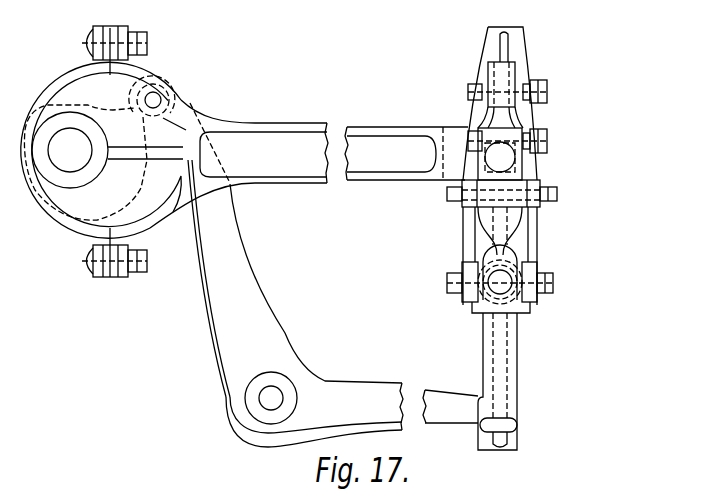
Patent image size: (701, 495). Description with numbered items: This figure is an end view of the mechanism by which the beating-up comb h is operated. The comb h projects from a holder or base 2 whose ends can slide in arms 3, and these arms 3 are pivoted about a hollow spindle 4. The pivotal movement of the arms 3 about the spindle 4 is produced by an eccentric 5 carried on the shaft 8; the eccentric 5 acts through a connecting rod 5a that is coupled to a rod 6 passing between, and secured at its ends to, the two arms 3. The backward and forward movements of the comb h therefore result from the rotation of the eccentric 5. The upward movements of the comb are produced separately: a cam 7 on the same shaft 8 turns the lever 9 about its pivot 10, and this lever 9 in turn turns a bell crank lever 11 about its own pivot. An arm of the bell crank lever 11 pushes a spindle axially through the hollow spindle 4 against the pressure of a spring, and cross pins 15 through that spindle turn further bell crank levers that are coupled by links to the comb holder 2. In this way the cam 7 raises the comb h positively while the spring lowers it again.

The holder or base 2 is at (495, 68).
The arms 3 is at (482, 53).
The hollow spindle 4 is at (497, 273).
The eccentric 5 is at (112, 86).
The connecting rod 5a is at (304, 140).
The rod 6 is at (500, 154).
The cam 7 is at (159, 236).
The shaft 8 is at (70, 150).
The lever 9 is at (295, 303).
The pivot 10 is at (273, 393).
The bell crank lever 11 is at (490, 359).
The cross pins 15 is at (447, 284).
The beating-up comb h is at (502, 42).